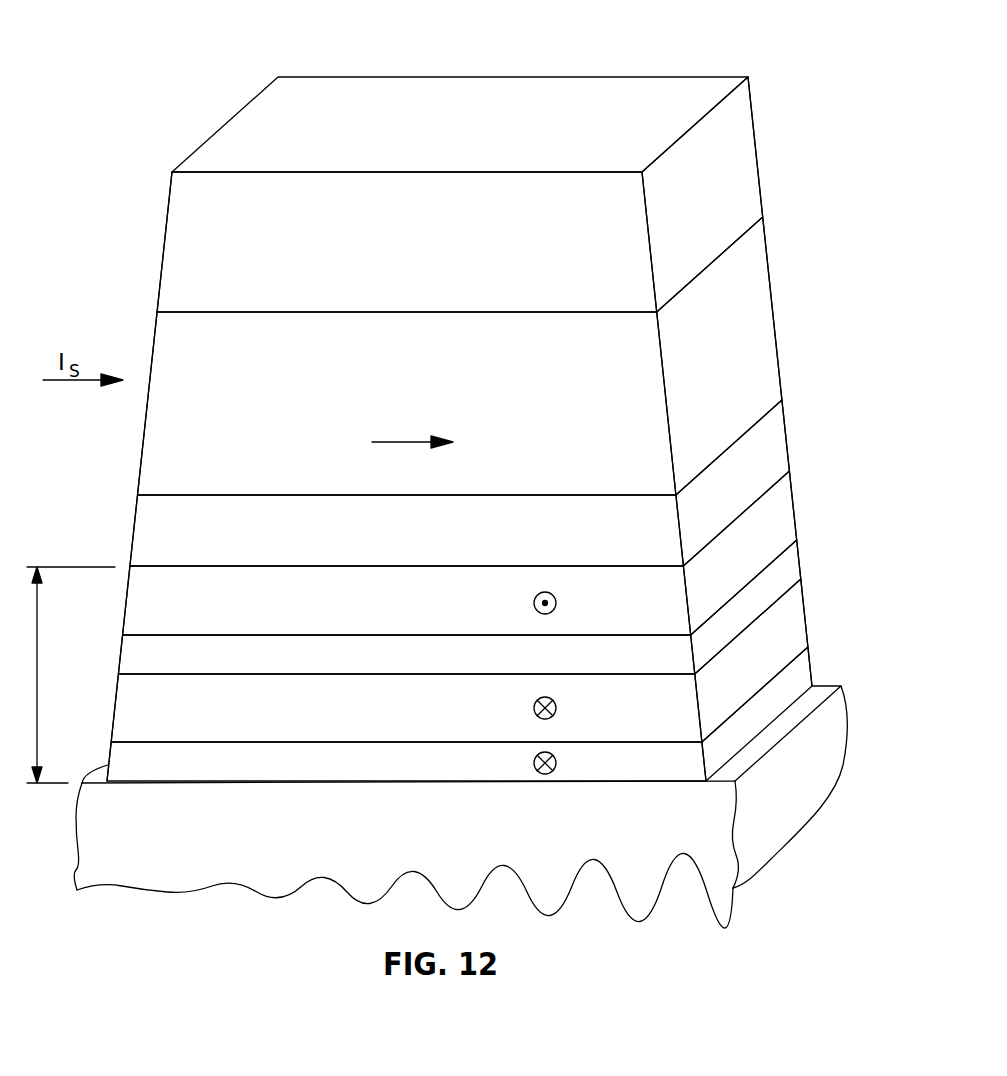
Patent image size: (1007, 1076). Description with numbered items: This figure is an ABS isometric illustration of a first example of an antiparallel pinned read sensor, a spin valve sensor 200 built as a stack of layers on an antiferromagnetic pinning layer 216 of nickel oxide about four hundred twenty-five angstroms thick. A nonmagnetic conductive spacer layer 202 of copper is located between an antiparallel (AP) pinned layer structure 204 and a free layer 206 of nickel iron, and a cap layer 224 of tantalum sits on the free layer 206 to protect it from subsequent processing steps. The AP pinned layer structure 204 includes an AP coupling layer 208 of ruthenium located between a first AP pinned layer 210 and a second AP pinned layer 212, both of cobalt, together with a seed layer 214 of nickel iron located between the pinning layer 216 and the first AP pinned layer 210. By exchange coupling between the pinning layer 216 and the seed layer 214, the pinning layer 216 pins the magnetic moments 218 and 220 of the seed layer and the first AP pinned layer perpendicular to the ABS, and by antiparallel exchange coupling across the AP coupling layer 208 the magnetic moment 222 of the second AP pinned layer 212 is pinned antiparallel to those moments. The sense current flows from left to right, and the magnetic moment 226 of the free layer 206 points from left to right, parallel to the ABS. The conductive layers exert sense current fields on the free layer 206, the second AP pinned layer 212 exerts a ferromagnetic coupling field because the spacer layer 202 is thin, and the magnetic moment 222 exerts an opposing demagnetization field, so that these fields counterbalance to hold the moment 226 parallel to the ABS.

The spin valve sensor 200 is at (649, 60).
The cap layer 224 is at (748, 146).
The free layer 206 is at (762, 283).
The magnetic moment of the free layer 226 is at (397, 443).
The nonmagnetic conductive spacer layer 202 is at (783, 434).
The second AP pinned layer 212 is at (785, 505).
The magnetic moment of the second AP pinned layer 222 is at (556, 603).
The AP coupling layer 208 is at (793, 565).
The first AP pinned layer 210 is at (798, 621).
The magnetic moment of the first AP pinned layer 220 is at (556, 708).
The seed layer 214 is at (805, 672).
The magnetic moment of the seed layer 218 is at (556, 763).
The antiferromagnetic pinning layer 216 is at (823, 801).
The antiparallel (AP) pinned layer structure 204 is at (37, 783).